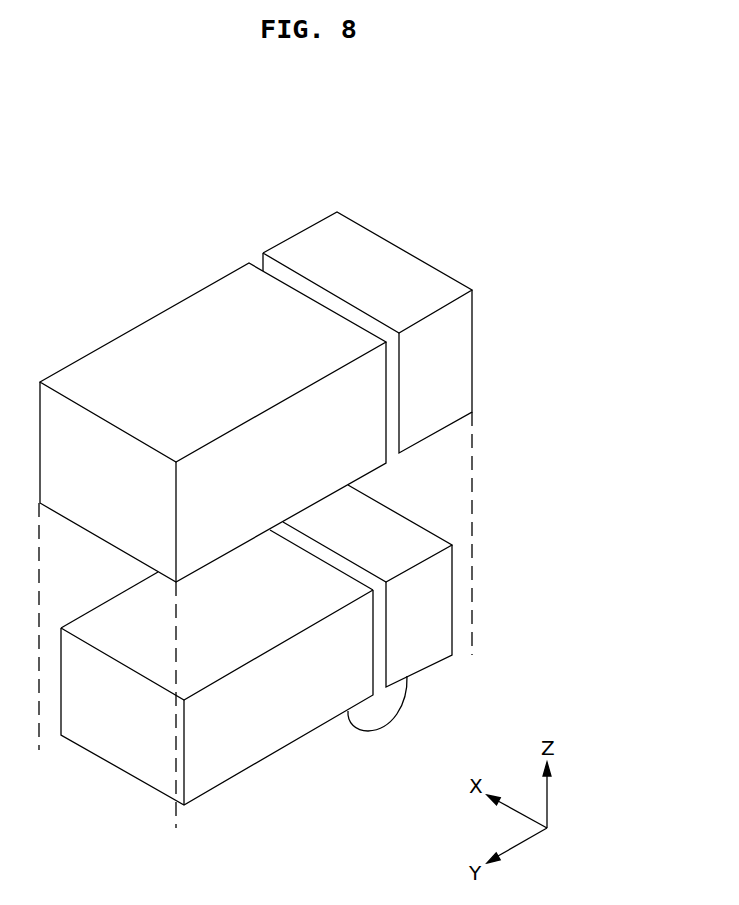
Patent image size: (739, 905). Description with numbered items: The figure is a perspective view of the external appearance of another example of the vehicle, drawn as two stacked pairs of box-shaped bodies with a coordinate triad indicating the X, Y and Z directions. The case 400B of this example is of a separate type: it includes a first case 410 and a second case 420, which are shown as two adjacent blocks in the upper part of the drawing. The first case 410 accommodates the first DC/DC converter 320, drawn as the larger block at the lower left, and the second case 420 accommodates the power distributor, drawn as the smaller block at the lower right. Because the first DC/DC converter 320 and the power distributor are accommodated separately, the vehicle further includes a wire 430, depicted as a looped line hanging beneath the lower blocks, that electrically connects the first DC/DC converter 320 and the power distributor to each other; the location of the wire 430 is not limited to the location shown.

The case 400B is at (302, 170).
The first case 410 is at (237, 308).
The second case 420 is at (320, 253).
The wire 430 is at (393, 715).
The first DC/DC converter 320 is at (128, 743).